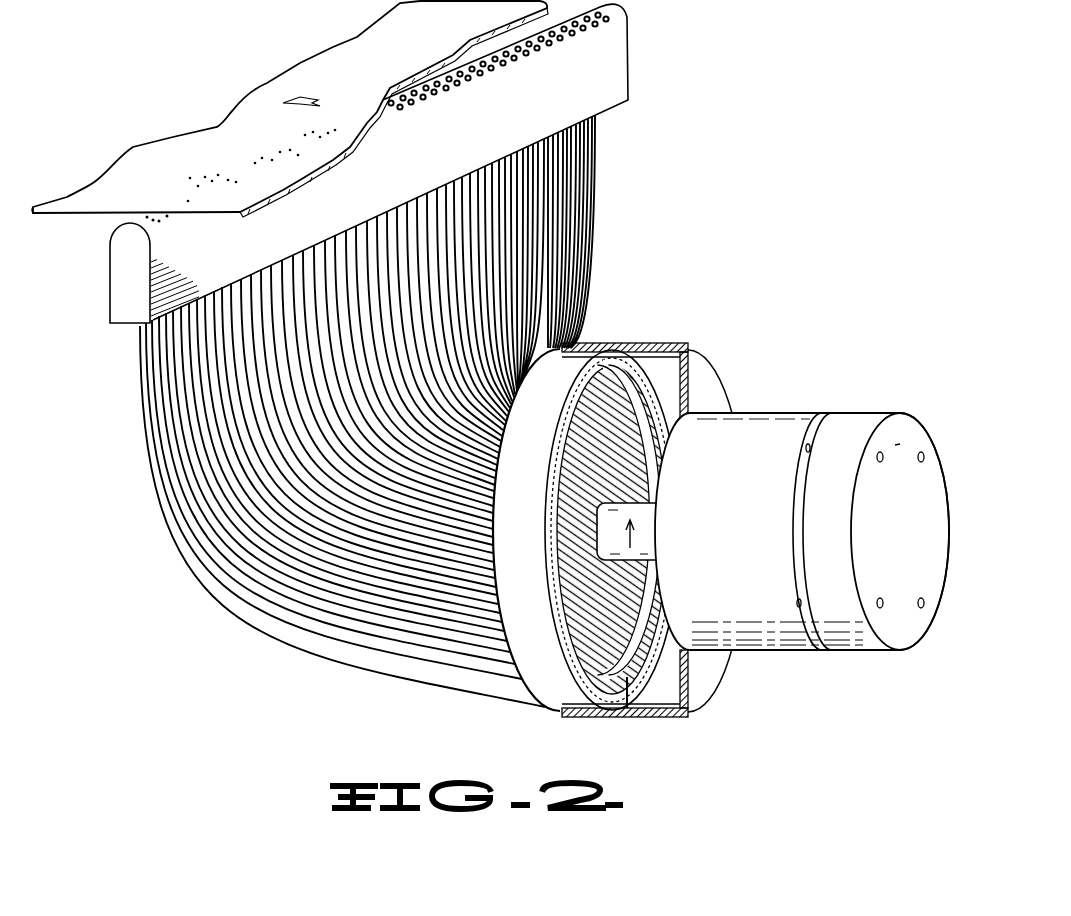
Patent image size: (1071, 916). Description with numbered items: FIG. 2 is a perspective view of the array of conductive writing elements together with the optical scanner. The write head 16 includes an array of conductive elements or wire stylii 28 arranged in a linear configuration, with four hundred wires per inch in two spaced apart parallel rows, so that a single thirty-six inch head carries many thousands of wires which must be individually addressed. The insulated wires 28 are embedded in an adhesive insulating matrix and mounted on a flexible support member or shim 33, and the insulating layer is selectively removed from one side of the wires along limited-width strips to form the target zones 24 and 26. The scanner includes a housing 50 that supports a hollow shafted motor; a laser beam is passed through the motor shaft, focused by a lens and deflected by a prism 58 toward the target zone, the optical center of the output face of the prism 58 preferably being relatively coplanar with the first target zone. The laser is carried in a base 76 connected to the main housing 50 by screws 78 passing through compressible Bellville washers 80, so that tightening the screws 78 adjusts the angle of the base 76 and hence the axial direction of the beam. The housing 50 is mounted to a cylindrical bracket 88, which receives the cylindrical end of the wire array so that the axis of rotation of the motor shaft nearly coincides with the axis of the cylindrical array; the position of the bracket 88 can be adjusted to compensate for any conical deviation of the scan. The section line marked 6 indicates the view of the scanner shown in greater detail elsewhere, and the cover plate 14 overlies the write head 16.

The cover plate 14 is at (206, 130).
The write head 16 is at (118, 288).
The conductive writing elements 28 is at (163, 505).
The flexible support member 33 is at (523, 653).
The target zone 26 is at (620, 397).
The target zone 24 is at (653, 397).
The prism 58 is at (597, 543).
The housing 50 is at (767, 413).
The base 76 is at (907, 428).
The screws 78 is at (920, 600).
The Bellville washers 80 is at (797, 601).
The cylindrical bracket 88 is at (712, 690).
The section line 6- 6 is at (895, 400).